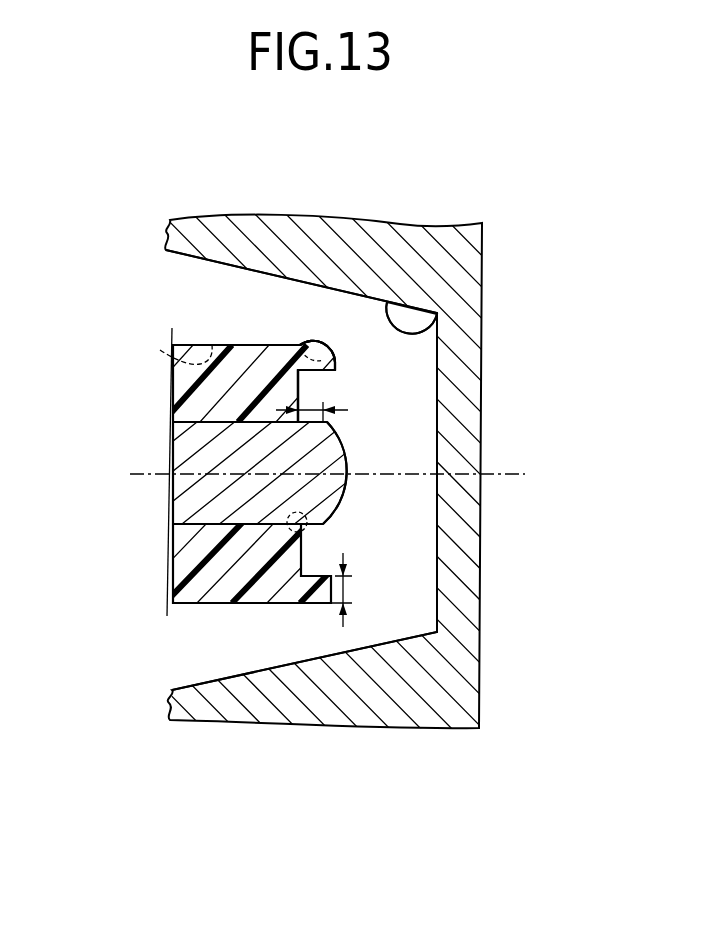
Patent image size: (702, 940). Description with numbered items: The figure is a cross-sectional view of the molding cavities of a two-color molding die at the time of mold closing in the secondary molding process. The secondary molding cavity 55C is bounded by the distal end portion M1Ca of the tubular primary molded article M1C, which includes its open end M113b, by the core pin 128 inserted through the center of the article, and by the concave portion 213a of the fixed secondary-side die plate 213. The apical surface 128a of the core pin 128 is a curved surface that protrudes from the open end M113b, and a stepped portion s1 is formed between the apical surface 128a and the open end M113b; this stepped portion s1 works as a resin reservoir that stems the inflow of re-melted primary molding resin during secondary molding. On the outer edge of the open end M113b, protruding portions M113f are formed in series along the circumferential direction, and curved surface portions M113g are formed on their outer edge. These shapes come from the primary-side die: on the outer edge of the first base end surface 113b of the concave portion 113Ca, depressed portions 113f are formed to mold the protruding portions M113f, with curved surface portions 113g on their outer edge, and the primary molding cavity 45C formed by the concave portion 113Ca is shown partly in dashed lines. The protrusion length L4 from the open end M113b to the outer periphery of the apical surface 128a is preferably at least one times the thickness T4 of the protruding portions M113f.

The fixed secondary-side die plate 213 is at (436, 240).
The concave portion 213a is at (425, 325).
The secondary molding cavity 55C is at (415, 598).
The primary molded article M1C is at (289, 470).
The distal end portion M1Ca is at (252, 612).
The first base end surface 113b is at (296, 392).
The depressed portions 113f is at (293, 343).
The curved surface portions 113g is at (303, 343).
The concave portion 113Ca is at (160, 350).
The core pin 128 is at (188, 503).
The apical surface 128a is at (345, 443).
The primary molding cavity 45C is at (238, 330).
The curved surface portions M113g is at (328, 336).
The protruding portions M113f is at (336, 358).
The open end M113b is at (300, 394).
The stepped portion s1 is at (306, 526).
The protrusion length L4 is at (312, 423).
The thickness T4 is at (348, 594).